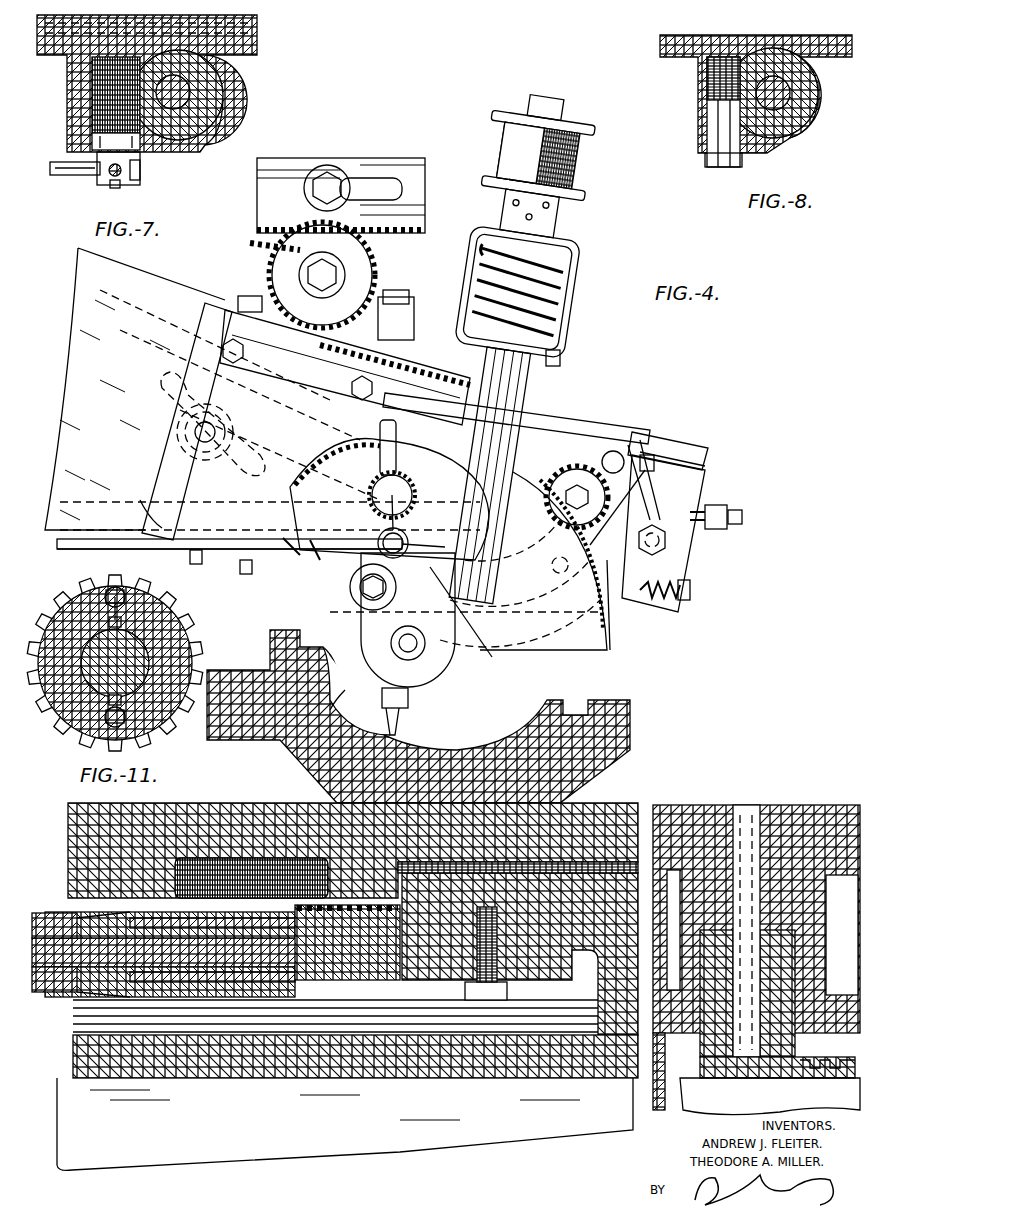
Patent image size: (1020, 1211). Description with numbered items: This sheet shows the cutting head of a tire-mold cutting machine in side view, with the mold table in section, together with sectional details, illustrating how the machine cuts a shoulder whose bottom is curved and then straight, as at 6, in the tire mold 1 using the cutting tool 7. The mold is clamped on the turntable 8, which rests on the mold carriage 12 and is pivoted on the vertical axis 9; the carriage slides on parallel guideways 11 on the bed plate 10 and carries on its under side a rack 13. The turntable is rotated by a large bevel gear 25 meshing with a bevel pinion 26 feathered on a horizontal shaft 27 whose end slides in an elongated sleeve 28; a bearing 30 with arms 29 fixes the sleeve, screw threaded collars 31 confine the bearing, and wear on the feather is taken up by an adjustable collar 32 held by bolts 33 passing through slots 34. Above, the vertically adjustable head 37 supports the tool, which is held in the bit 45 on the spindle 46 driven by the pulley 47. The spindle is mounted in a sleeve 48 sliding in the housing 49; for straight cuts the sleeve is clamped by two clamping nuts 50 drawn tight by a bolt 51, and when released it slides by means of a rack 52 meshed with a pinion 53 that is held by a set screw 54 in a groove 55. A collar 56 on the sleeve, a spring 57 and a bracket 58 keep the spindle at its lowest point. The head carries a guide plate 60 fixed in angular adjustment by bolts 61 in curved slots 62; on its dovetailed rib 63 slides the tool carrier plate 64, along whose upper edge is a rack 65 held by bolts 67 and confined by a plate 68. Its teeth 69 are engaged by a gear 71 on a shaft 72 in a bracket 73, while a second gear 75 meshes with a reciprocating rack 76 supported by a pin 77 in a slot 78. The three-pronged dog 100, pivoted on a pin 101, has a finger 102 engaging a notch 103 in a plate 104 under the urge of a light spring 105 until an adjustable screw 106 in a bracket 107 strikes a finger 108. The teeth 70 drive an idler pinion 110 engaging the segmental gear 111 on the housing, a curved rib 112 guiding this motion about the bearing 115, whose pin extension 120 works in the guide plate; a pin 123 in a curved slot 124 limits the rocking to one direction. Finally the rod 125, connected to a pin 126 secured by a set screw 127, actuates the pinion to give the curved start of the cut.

In FIG. 4, the tire mold 1 is at (615, 755).
In FIG. 4, the curved then straight cut 6 is at (383, 712).
In FIG. 4, the cutting tool 7 is at (270, 540).
In FIG. 4, the turntable 8 is at (80, 812).
In FIG. 4, the vertical axis 9 is at (752, 825).
In FIG. 4, the bed plate 10 is at (380, 1148).
In FIG. 4, the guideways 11 is at (68, 898).
In FIG. 4, the mold carriage 12 is at (830, 1000).
In FIG. 4, the rack 13 is at (805, 1070).
In FIG. 4, the bevel gear 25 is at (372, 912).
In FIG. 11, the bevel pinion 26 is at (150, 735).
In FIG. 4, the bevel pinion 26 is at (82, 1010).
In FIG. 11, the horizontal shaft 27 is at (135, 663).
In FIG. 4, the horizontal shaft 27 is at (305, 962).
In FIG. 4, the elongated sleeve 28 is at (296, 930).
In FIG. 4, the arms 29 is at (425, 975).
In FIG. 4, the bearing 30 is at (240, 1040).
In FIG. 4, the screw threaded collars 31 is at (296, 990).
In FIG. 11, the adjustable collar 32 is at (180, 640).
In FIG. 4, the adjustable collar 32 is at (48, 912).
In FIG. 11, the bolts 33 is at (120, 596).
In FIG. 4, the bolts 33 is at (60, 995).
In FIG. 11, the slots 34 is at (112, 590).
In FIG. 4, the vertically adjustable head 37 is at (130, 300).
In FIG. 4, the bit 45 is at (410, 700).
In FIG. 7, the spindle 46 is at (192, 87).
In FIG. 8, the spindle 46 is at (790, 88).
In FIG. 4, the spindle 46 is at (560, 108).
In FIG. 4, the pulley 47 is at (575, 185).
In FIG. 7, the sleeve 48 is at (206, 100).
In FIG. 8, the sleeve 48 is at (790, 58).
In FIG. 4, the sleeve 48 is at (540, 290).
In FIG. 7, the housing 49 is at (210, 128).
In FIG. 8, the housing 49 is at (812, 118).
In FIG. 4, the housing 49 is at (545, 404).
In FIG. 8, the clamping nuts 50 is at (748, 57).
In FIG. 8, the bolt 51 is at (728, 166).
In FIG. 4, the bolt 51 is at (355, 578).
In FIG. 7, the rack 52 is at (135, 108).
In FIG. 4, the rack 52 is at (440, 408).
In FIG. 7, the pinion 53 is at (96, 75).
In FIG. 4, the pinion 53 is at (330, 450).
In FIG. 4, the set screw 54 is at (406, 372).
In FIG. 7, the groove 55 is at (135, 140).
In FIG. 4, the collar 56 is at (548, 338).
In FIG. 4, the spring 57 is at (545, 300).
In FIG. 4, the bracket 58 is at (552, 315).
In FIG. 4, the guide plate 60 is at (205, 366).
In FIG. 4, the bolts 61 is at (222, 436).
In FIG. 4, the curved slots 62 is at (245, 450).
In FIG. 4, the dovetailed rib 63 is at (168, 500).
In FIG. 4, the tool carrier plate 64 is at (245, 565).
In FIG. 4, the rack 65 is at (310, 388).
In FIG. 4, the bolts 67 is at (350, 350).
In FIG. 4, the plate 68 is at (560, 360).
In FIG. 4, the teeth 69 is at (245, 296).
In FIG. 4, the teeth 70 is at (548, 490).
In FIG. 4, the gear 71 is at (378, 275).
In FIG. 4, the shaft 72 is at (330, 272).
In FIG. 4, the bracket 73 is at (405, 318).
In FIG. 4, the second gear 75 is at (269, 244).
In FIG. 4, the reciprocating rack 76 is at (420, 212).
In FIG. 4, the pin 77 is at (330, 186).
In FIG. 4, the slot 78 is at (387, 188).
In FIG. 4, the three-pronged dog 100 is at (680, 480).
In FIG. 4, the pin 101 is at (668, 545).
In FIG. 4, the finger 102 is at (630, 480).
In FIG. 4, the notch 103 is at (660, 455).
In FIG. 4, the plate 104 is at (647, 455).
In FIG. 4, the light spring 105 is at (655, 600).
In FIG. 4, the adjustable screw 106 is at (742, 515).
In FIG. 4, the bracket 107 is at (718, 505).
In FIG. 4, the finger 108 is at (700, 510).
In FIG. 4, the idler pinion 110 is at (617, 510).
In FIG. 4, the segmental gear 111 is at (610, 640).
In FIG. 4, the curved rib 112 is at (298, 562).
In FIG. 4, the bearing 115 is at (440, 678).
In FIG. 4, the extension 120 is at (362, 627).
In FIG. 4, the pin 123 is at (571, 555).
In FIG. 4, the curved slot 124 is at (530, 645).
In FIG. 7, the rod 125 is at (75, 168).
In FIG. 4, the rod 125 is at (75, 550).
In FIG. 7, the pin 126 is at (110, 176).
In FIG. 4, the pin 126 is at (380, 445).
In FIG. 7, the set screw 127 is at (118, 186).
In FIG. 4, the set screw 127 is at (410, 485).